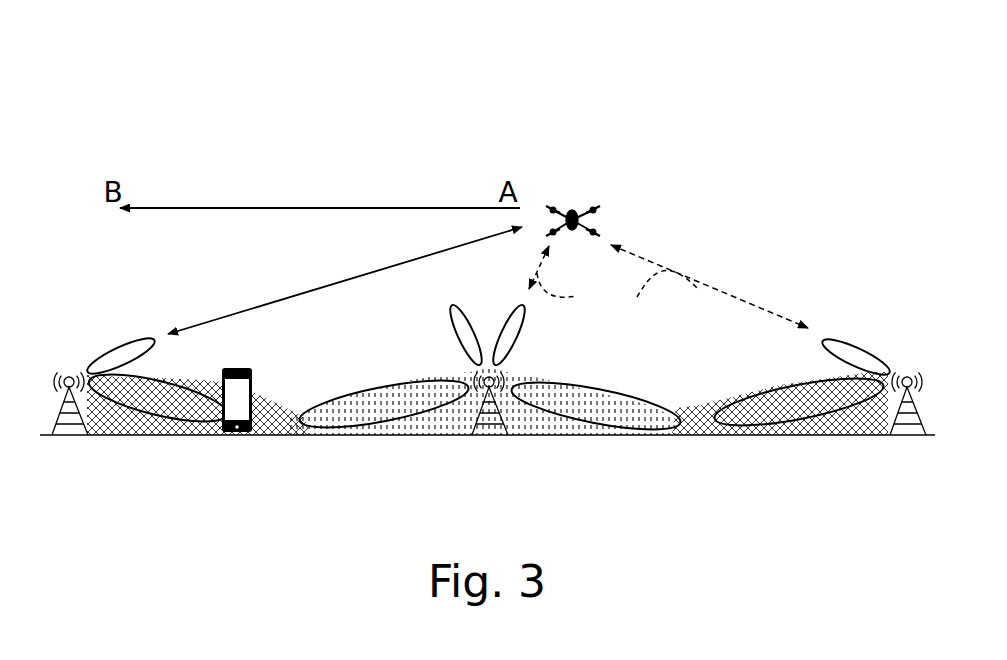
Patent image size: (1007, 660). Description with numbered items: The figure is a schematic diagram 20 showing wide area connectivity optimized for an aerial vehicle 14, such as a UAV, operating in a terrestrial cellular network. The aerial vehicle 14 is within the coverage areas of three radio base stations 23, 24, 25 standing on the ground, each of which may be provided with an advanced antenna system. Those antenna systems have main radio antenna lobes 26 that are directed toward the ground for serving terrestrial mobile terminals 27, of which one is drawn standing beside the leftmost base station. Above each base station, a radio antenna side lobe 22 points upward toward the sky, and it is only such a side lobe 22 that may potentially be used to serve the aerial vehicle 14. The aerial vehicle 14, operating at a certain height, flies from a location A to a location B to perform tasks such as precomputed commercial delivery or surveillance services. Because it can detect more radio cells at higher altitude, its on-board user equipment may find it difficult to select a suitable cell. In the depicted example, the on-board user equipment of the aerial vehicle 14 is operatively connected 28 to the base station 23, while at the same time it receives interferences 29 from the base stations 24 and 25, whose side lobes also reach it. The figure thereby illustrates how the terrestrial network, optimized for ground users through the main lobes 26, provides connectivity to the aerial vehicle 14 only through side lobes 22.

The aerial vehicle 14 is at (571, 200).
The diagram 20 is at (480, 110).
The radio antenna side lobe 22 is at (118, 346).
The radio base station 23 is at (67, 436).
The radio base station 24 is at (491, 436).
The radio base station 25 is at (907, 436).
The main radio antenna lobe 26 is at (178, 388).
The terrestrial mobile terminal 27 is at (258, 392).
The operative connection 28 is at (254, 310).
The interferences 29 is at (617, 299).